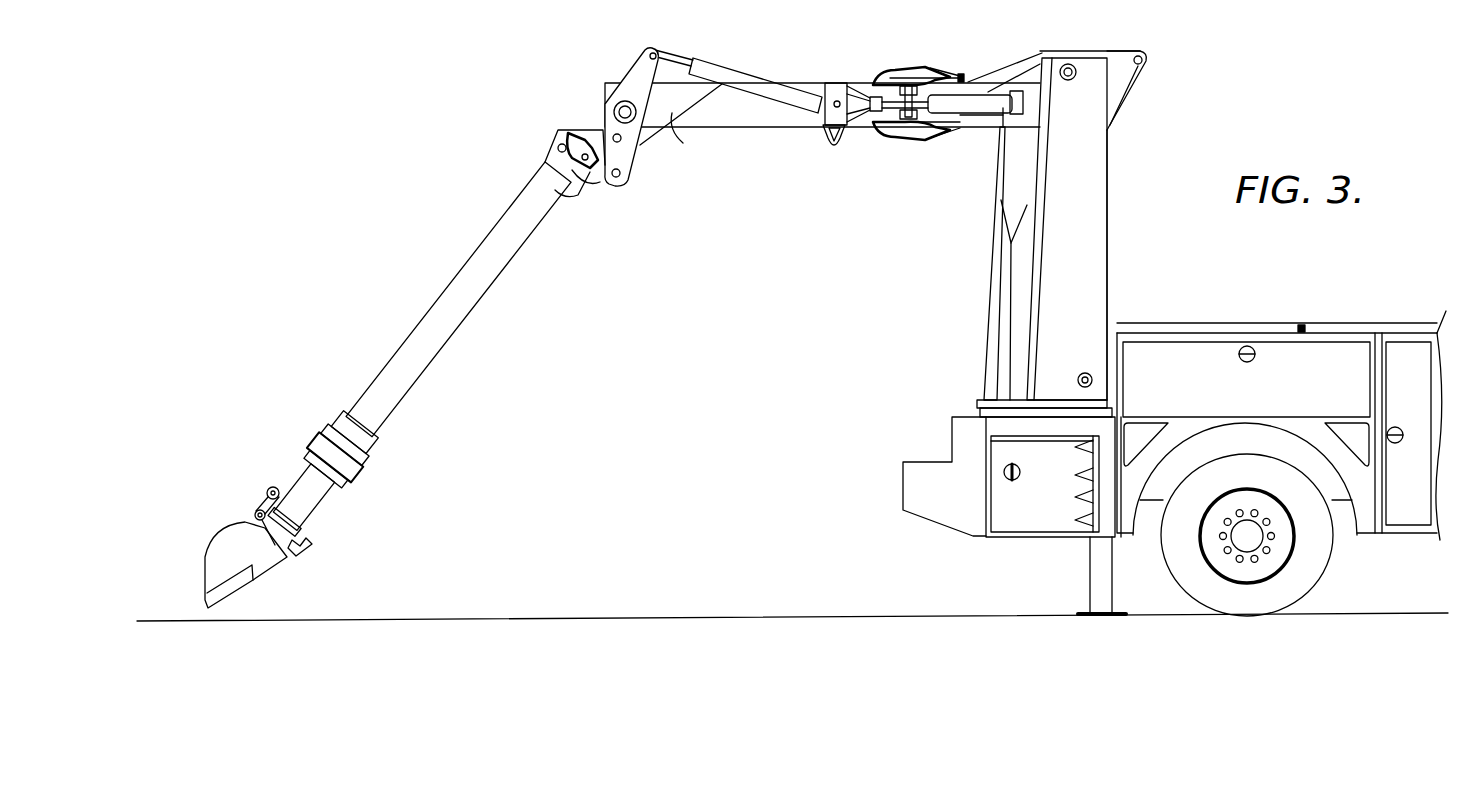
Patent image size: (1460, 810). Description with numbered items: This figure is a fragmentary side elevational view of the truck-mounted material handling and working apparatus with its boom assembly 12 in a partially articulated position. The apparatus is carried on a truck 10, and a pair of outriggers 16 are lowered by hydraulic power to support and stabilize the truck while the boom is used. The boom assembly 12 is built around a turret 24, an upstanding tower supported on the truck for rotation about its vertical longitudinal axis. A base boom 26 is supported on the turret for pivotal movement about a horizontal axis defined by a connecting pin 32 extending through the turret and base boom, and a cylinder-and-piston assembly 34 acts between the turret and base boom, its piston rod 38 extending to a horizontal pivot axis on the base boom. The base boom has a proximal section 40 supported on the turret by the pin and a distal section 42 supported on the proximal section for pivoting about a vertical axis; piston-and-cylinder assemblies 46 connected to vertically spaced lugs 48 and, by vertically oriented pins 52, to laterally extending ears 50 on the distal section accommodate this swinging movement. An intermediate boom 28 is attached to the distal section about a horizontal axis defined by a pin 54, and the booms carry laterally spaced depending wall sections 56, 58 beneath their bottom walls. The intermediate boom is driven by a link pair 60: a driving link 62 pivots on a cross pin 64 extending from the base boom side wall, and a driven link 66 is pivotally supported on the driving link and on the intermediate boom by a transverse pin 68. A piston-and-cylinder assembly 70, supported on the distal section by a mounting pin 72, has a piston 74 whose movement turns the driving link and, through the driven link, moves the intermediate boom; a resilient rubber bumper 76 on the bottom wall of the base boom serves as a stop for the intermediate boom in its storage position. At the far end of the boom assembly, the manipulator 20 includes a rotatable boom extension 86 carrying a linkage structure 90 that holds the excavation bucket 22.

The truck 10 is at (1322, 314).
The boom assembly 12 is at (1135, 245).
The outriggers 16 is at (1102, 563).
The manipulator 20 is at (320, 422).
The excavation bucket 22 is at (262, 565).
The turret 24 is at (1002, 312).
The base boom 26 is at (1142, 74).
The intermediate boom 28 is at (445, 335).
The connecting pin 32 is at (1072, 70).
The cylinder-and-piston assembly 34 is at (1110, 187).
The rod 38 is at (1113, 122).
The proximal section 40 is at (970, 118).
The distal section 42 is at (760, 115).
The piston-and-cylinder assemblies 46 is at (960, 73).
The lugs 48 is at (993, 85).
The ears 50 is at (880, 130).
The pins 52 is at (872, 95).
The pin 54 is at (620, 142).
The depending wall section 56 is at (672, 125).
The depending wall section 58 is at (595, 130).
The link pair 60 is at (621, 101).
The driving link 62 is at (640, 82).
The cross pin 64 is at (620, 110).
The driven link 66 is at (598, 170).
The transverse pin 68 is at (588, 185).
The piston-and-cylinder assembly 70 is at (735, 66).
The mounting pin 72 is at (837, 98).
The piston 74 is at (668, 56).
The resilient rubber bumper 76 is at (830, 150).
The boom extension 86 is at (325, 513).
The linkage structure 90 is at (268, 494).